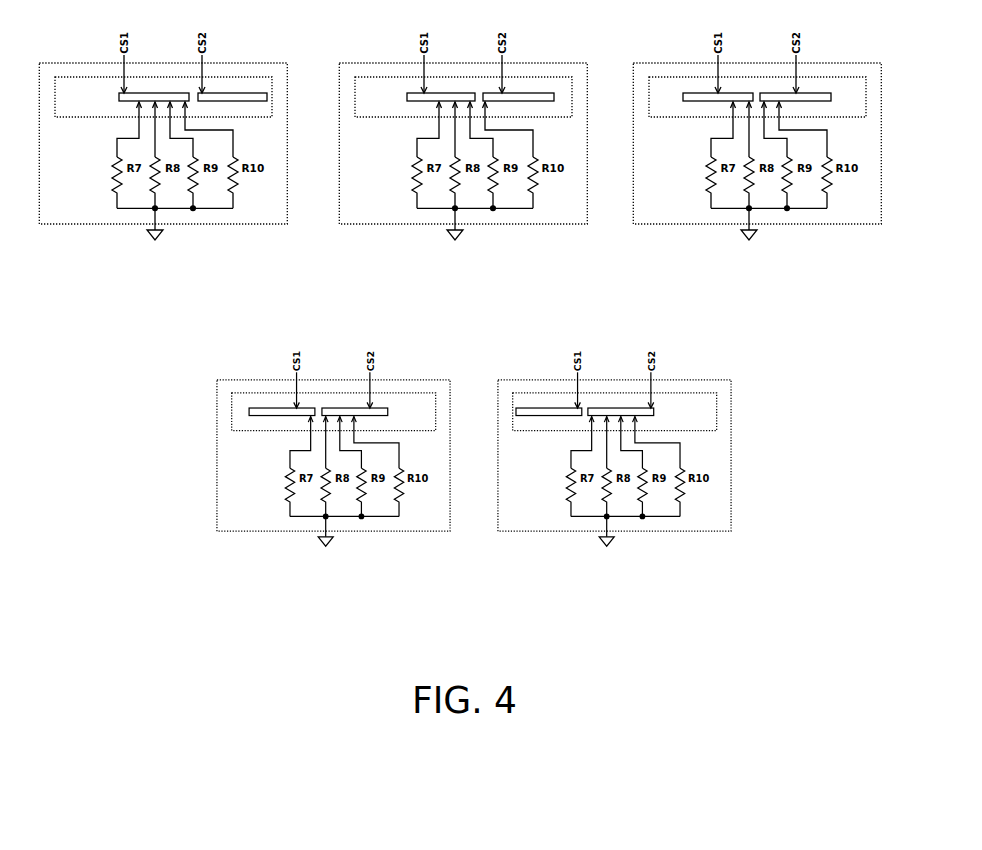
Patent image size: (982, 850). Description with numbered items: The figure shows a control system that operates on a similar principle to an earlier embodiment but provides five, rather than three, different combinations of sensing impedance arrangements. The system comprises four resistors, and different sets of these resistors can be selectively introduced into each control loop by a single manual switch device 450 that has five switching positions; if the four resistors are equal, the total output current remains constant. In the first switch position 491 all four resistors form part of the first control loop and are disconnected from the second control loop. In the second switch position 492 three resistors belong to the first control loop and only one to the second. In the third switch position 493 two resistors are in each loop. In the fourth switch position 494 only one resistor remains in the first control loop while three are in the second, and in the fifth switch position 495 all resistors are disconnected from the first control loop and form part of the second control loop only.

The single manual switch device 450 is at (255, 77).
The first switch position 491 is at (195, 258).
The second switch position 492 is at (480, 253).
The third switch position 493 is at (748, 257).
The fourth switch position 494 is at (310, 572).
The fifth switch position 495 is at (608, 573).